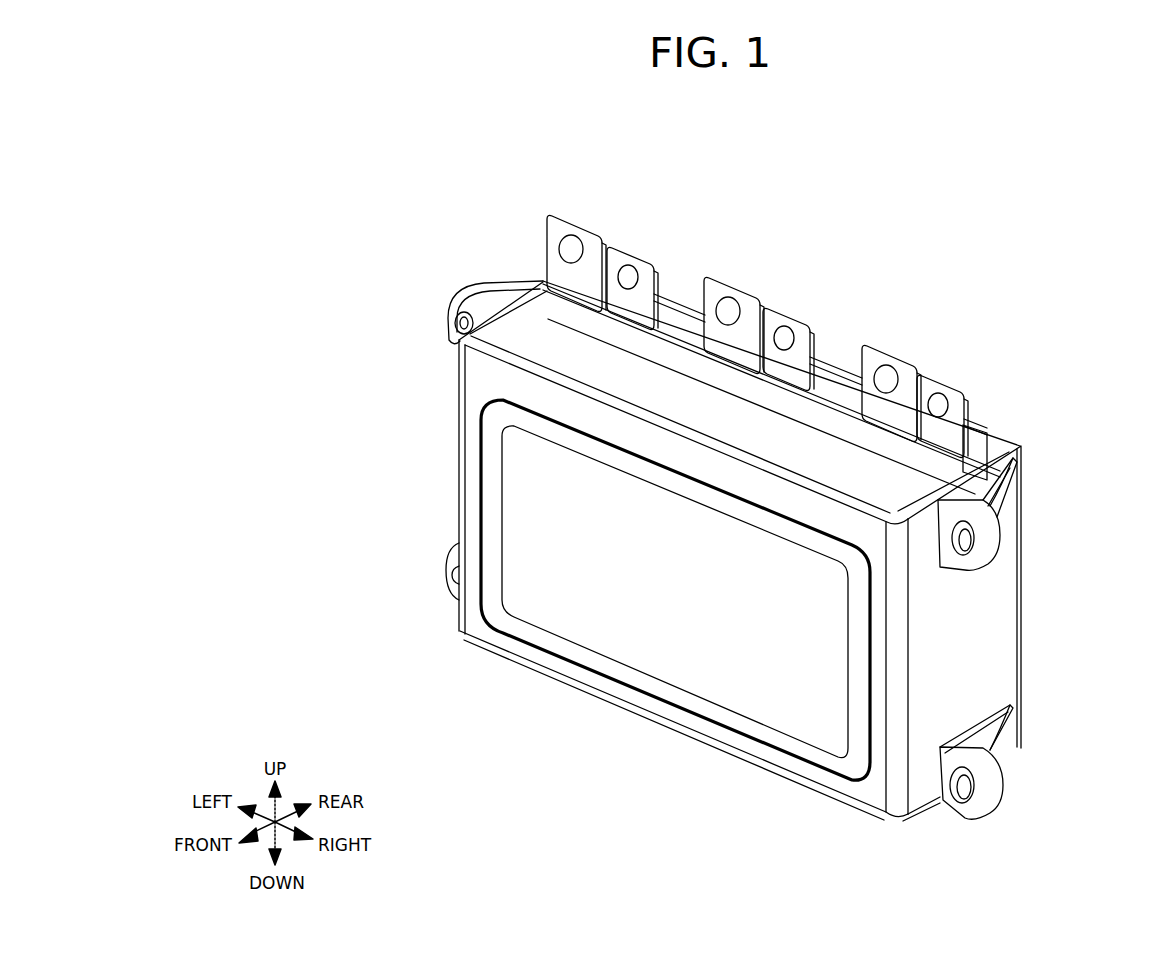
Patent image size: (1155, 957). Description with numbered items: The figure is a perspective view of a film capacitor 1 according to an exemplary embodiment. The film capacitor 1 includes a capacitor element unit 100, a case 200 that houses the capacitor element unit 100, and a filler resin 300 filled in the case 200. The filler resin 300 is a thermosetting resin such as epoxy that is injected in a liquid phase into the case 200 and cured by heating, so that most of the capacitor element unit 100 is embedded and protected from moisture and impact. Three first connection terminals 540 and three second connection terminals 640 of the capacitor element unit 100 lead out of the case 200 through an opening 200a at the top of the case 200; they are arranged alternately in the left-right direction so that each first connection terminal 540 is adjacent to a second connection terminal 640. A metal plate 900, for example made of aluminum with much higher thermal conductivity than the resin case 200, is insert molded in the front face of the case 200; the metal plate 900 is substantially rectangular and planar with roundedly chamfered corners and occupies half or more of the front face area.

The film capacitor 1 is at (343, 307).
The capacitor element unit 100 is at (970, 417).
The case 200 is at (993, 638).
The opening 200a is at (850, 493).
The filler resin 300 is at (518, 348).
The first connection terminal 540 is at (632, 250).
The second connection terminal 640 is at (576, 218).
The metal plate 900 is at (640, 612).